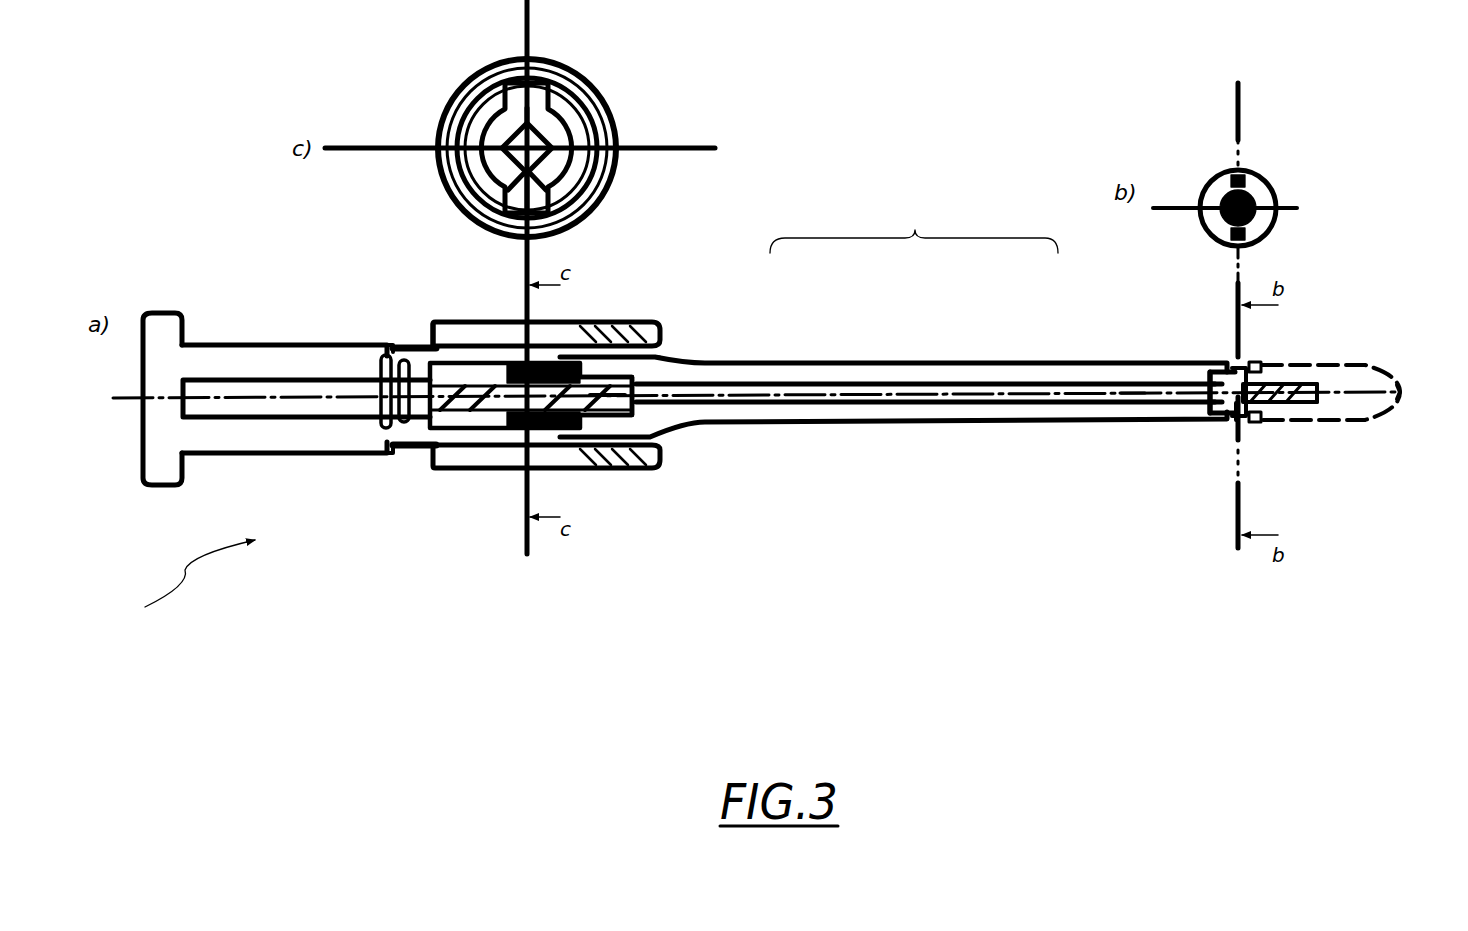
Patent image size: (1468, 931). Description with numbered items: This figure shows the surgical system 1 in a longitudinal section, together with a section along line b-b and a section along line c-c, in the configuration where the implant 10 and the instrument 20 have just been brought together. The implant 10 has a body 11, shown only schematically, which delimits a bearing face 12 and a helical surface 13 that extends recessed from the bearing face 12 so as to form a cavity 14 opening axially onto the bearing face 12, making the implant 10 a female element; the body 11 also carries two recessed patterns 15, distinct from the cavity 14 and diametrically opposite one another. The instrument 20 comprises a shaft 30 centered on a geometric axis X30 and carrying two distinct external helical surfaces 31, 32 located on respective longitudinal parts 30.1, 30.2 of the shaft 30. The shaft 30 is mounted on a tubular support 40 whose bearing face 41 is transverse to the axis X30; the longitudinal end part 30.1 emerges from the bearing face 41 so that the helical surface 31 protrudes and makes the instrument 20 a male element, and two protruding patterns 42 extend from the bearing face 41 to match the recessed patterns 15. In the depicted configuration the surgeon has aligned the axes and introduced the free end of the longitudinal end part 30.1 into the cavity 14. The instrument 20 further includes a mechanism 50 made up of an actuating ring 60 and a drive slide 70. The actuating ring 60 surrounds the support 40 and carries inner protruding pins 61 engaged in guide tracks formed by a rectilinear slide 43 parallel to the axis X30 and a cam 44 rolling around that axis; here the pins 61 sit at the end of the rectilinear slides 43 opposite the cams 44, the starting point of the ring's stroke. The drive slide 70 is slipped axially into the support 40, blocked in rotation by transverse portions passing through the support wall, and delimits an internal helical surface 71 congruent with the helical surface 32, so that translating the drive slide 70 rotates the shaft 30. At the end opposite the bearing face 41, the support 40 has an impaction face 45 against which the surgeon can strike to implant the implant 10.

The surgical system 1 is at (191, 580).
The implant 10 is at (1378, 352).
The body 11 is at (1402, 392).
The bearing face 12 is at (1236, 421).
The helical surface 13 is at (1296, 385).
The cavity 14 is at (1320, 398).
The recessed pattern 15 is at (1258, 366).
The instrument 20 is at (914, 227).
The shaft 30 is at (1063, 370).
The longitudinal end part 30.1 is at (1210, 418).
The longitudinal part 30.2 is at (616, 470).
The helical surface 31 is at (1233, 367).
The helical surface 32 is at (562, 120).
The support 40 is at (941, 357).
The bearing face 41 is at (1222, 372).
The protruding pattern 42 is at (1240, 140).
The rectilinear slide 43 is at (424, 343).
The cam 44 is at (384, 370).
The impaction face 45 is at (145, 418).
The mechanism 50 is at (687, 333).
The actuating ring 60 is at (605, 112).
The protruding pin 61 is at (433, 321).
The drive slide 70 is at (492, 164).
The helical surface 71 is at (462, 108).
The geometric axis X30 is at (1135, 403).